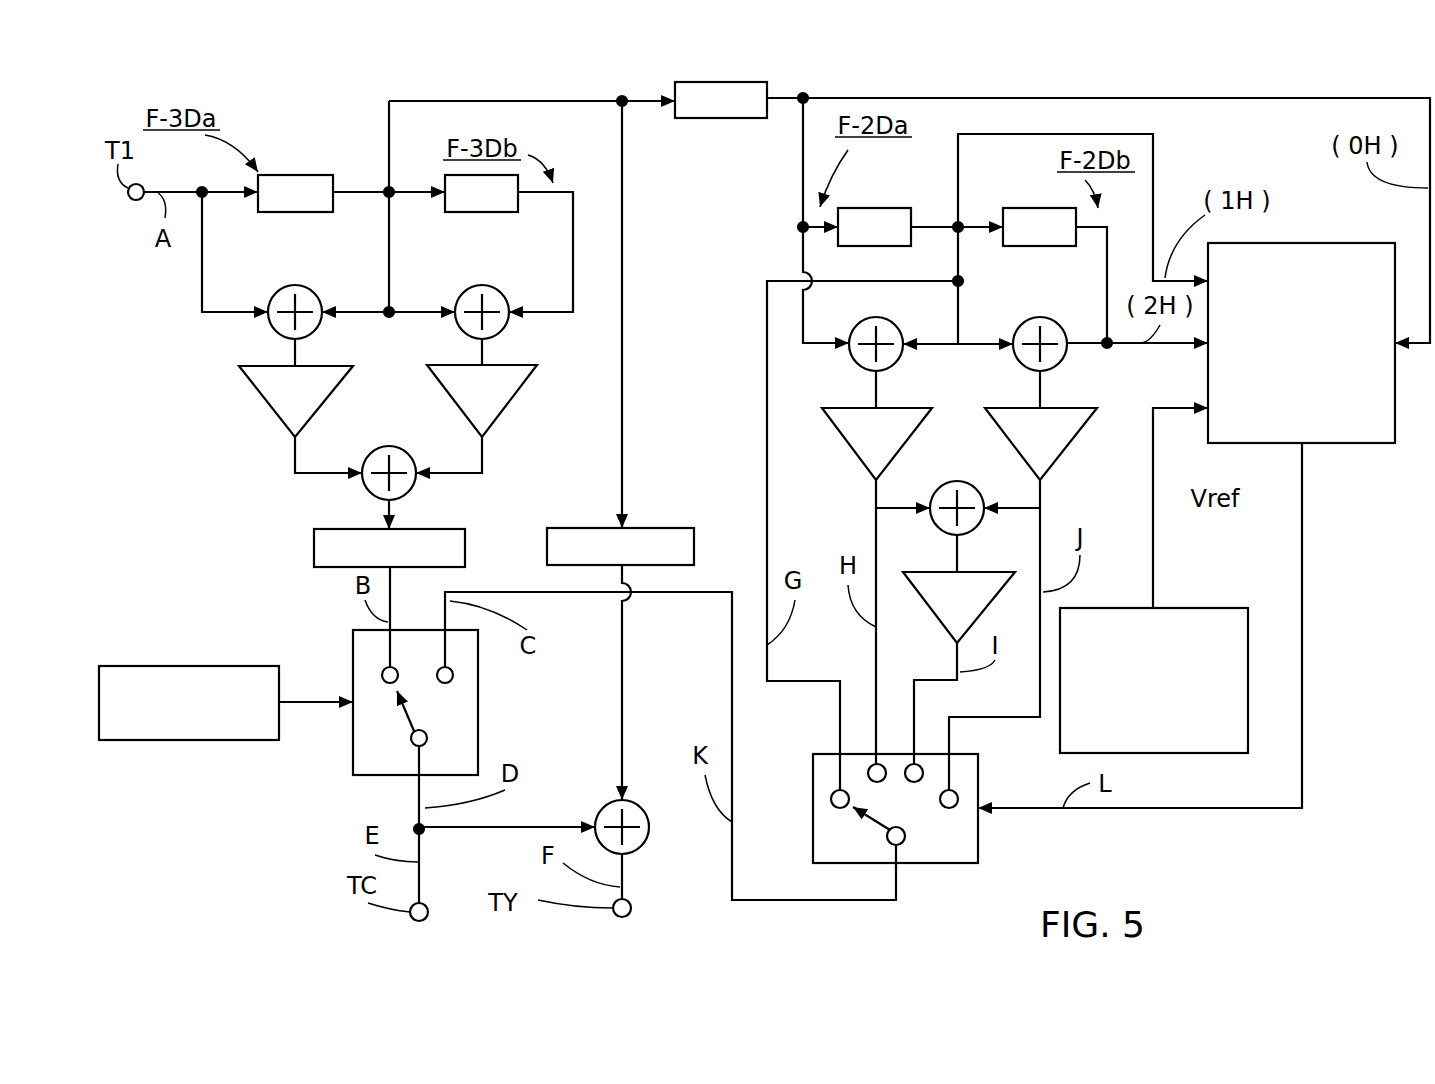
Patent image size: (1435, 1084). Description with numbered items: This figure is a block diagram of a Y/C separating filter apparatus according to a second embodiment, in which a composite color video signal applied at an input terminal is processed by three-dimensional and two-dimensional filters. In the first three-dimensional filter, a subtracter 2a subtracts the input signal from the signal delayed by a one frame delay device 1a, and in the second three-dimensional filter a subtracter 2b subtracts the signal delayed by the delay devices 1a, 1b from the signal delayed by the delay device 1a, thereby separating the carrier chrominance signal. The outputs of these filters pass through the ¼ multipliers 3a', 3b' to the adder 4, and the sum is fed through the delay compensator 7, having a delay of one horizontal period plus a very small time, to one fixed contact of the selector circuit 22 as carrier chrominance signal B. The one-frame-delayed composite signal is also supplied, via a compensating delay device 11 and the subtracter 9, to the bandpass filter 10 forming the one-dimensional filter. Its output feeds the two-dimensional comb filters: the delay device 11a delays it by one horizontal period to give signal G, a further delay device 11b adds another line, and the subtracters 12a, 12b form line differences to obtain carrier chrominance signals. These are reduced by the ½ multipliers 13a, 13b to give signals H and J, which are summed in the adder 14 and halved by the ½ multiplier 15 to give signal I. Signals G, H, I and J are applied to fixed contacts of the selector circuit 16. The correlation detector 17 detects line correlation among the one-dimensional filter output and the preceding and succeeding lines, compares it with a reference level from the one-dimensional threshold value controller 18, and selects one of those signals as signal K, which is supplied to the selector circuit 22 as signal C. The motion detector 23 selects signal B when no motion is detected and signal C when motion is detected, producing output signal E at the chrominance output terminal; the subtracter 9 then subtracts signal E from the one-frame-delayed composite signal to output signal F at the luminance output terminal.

The one frame delay device 1a is at (292, 175).
The one frame delay device 1b is at (445, 176).
The subtracter 2a is at (296, 287).
The subtracter 2b is at (484, 287).
The ¼ multiplier 3a' is at (291, 409).
The ¼ multiplier 3b' is at (496, 408).
The adder 4 is at (396, 447).
The delay compensator 7 is at (420, 527).
The subtracter 9 is at (597, 812).
The bandpass filter 10 is at (724, 118).
The 1H+beta delay circuit 11 is at (640, 526).
The delay device 11a is at (886, 208).
The 1H delay circuit 11b is at (1030, 208).
The subtracter 12a is at (893, 318).
The subtracter 12b is at (1025, 318).
The ½ multiplier 13a is at (838, 440).
The ½ multiplier 13b is at (1082, 440).
The adder 14 is at (958, 483).
The ½ multiplier 15 is at (922, 600).
The selector circuit 16 is at (978, 828).
The correlation detector 17 is at (1300, 243).
The one-dimensional threshold value controller 18 is at (1180, 607).
The selector circuit 22 is at (482, 740).
The motion detector 23 is at (232, 666).